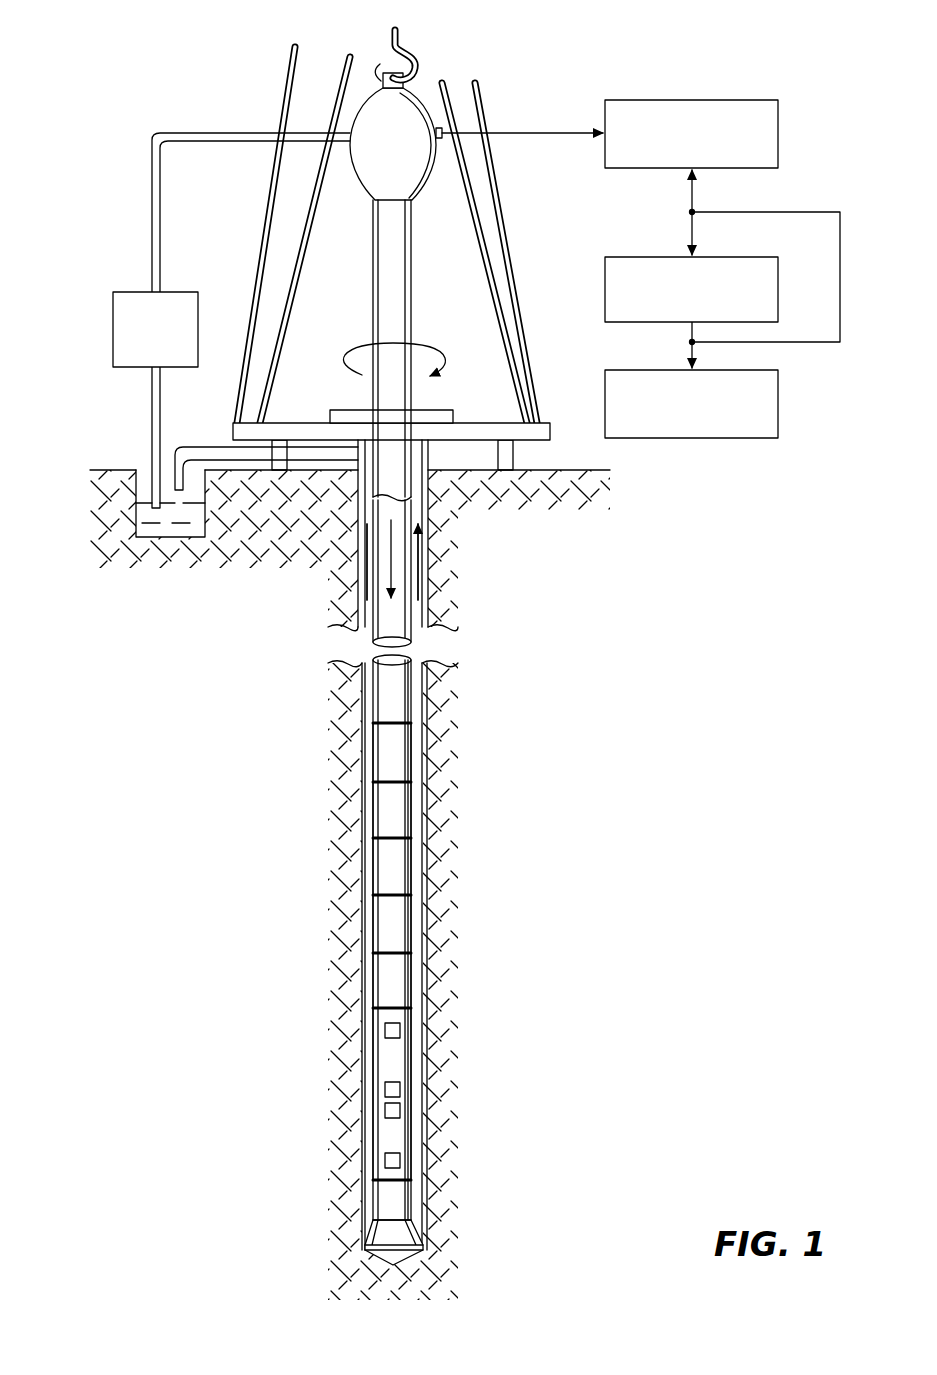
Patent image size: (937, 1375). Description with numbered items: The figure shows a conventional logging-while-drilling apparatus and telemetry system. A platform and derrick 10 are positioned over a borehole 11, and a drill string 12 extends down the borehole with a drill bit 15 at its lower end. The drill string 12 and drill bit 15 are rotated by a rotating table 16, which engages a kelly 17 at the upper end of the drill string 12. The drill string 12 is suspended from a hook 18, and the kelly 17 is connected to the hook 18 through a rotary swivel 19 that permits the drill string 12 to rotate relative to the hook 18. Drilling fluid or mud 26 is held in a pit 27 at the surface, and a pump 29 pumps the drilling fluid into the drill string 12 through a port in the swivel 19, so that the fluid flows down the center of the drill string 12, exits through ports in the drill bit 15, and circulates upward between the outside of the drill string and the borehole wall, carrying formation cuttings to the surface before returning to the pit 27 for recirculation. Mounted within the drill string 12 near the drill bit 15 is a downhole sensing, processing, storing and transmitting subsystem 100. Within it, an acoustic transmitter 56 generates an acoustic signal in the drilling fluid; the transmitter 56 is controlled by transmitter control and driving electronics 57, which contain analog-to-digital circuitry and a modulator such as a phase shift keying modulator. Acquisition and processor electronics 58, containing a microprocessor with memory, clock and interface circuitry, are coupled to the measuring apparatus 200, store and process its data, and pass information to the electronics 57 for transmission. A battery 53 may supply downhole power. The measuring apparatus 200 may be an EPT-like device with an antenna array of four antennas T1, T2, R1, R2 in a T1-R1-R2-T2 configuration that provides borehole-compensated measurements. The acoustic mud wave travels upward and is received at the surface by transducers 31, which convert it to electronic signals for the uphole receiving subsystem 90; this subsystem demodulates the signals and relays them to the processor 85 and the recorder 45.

The platform and derrick 10 is at (592, 443).
The borehole 11 is at (420, 630).
The drill string 12 is at (392, 557).
The drill bit 15 is at (372, 1230).
The rotating table 16 is at (436, 412).
The kelly 17 is at (399, 228).
The hook 18 is at (392, 33).
The rotary swivel 19 is at (380, 181).
The drilling fluid or mud 26 is at (173, 535).
The pit 27 is at (133, 512).
The pump 29 is at (122, 368).
The transducers 31 is at (443, 138).
The recorder 45 is at (779, 403).
The battery 53 is at (413, 853).
The acoustic transmitter 56 is at (413, 770).
The transmitter control and driving electronics 57 is at (413, 808).
The acquisition and processor electronics 58 is at (413, 923).
The processor 85 is at (779, 267).
The uphole receiving subsystem 90 is at (713, 100).
The downhole sensing, processing, storing and transmitting subsystem 100 is at (457, 960).
The measuring apparatus 200 is at (401, 1068).
The antenna (transmitter) T1 is at (385, 1030).
The antenna (transmitter) T2 is at (385, 1160).
The antenna (receiver) R1 is at (385, 1090).
The antenna (receiver) R2 is at (385, 1113).